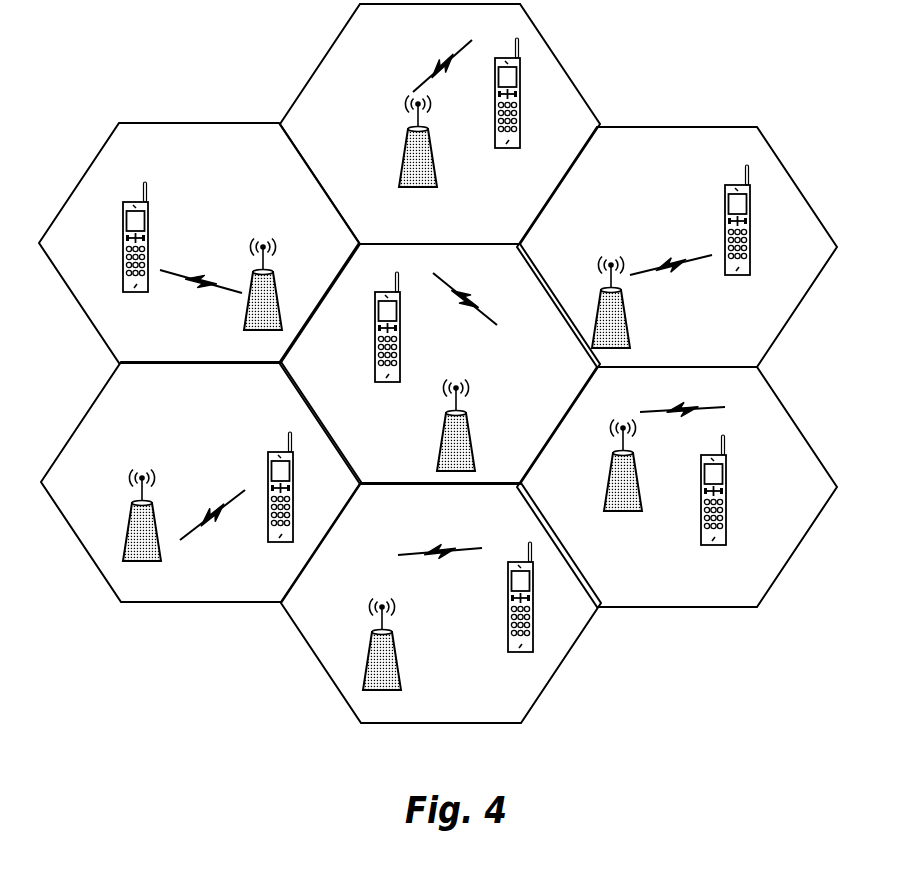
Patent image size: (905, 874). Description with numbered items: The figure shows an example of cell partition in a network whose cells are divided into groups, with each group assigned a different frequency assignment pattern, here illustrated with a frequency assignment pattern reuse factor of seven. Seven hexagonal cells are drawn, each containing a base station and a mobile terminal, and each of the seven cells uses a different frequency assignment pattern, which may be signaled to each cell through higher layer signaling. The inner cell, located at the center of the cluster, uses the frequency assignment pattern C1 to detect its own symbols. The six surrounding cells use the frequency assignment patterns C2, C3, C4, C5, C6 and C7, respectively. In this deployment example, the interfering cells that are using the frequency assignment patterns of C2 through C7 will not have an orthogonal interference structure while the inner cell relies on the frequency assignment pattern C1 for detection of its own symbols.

The frequency assignment pattern C1 is at (440, 364).
The frequency assignment pattern C2 is at (440, 124).
The frequency assignment pattern C3 is at (677, 247).
The frequency assignment pattern C4 is at (677, 487).
The frequency assignment pattern C5 is at (441, 603).
The frequency assignment pattern C6 is at (201, 482).
The frequency assignment pattern C7 is at (199, 243).